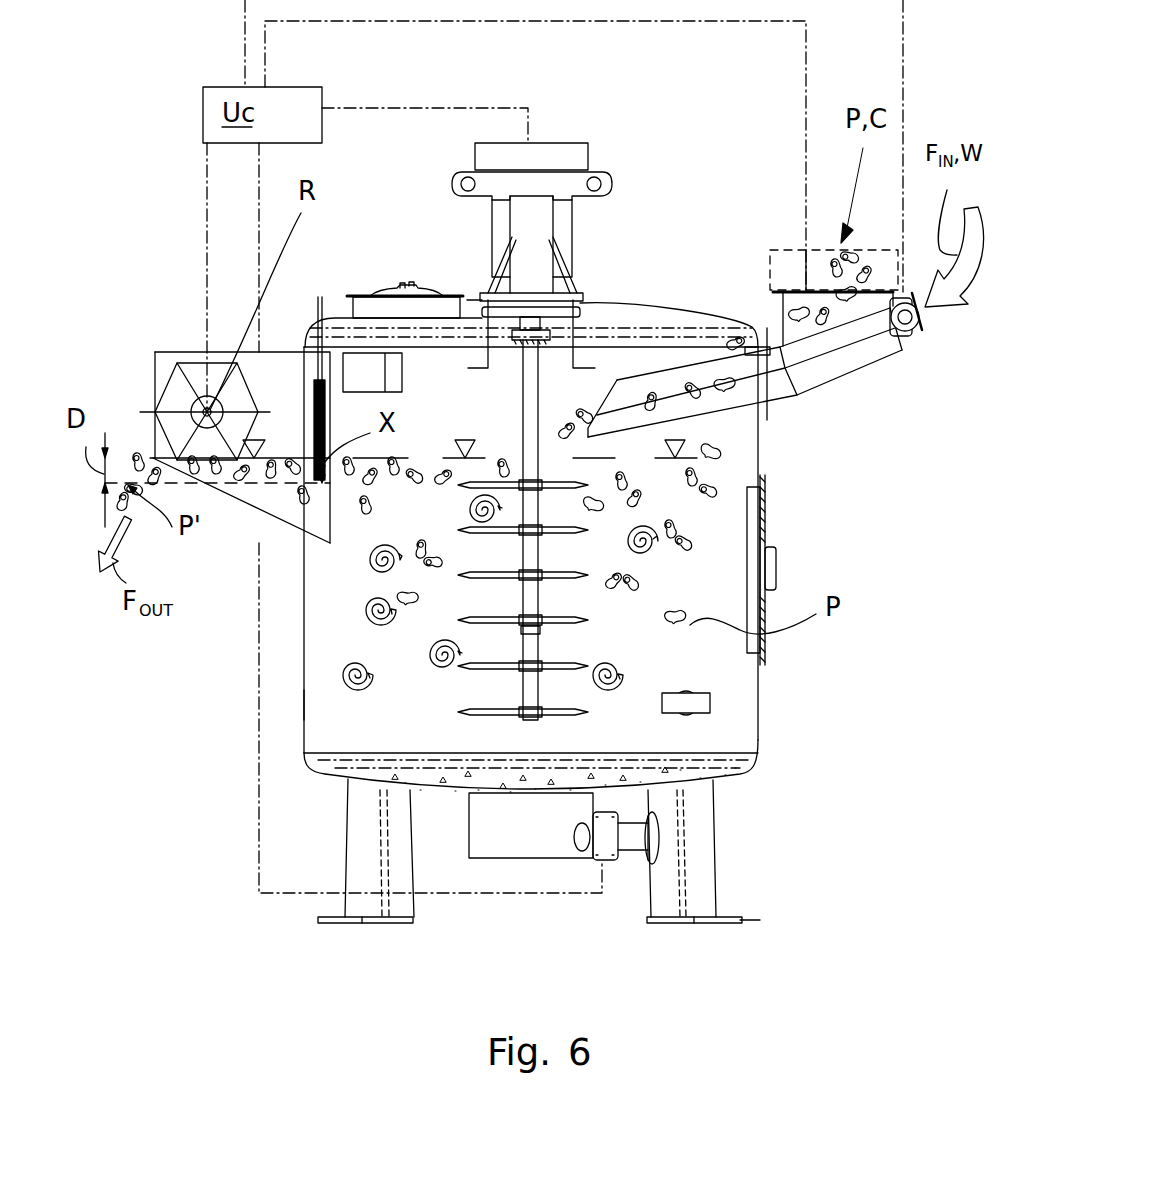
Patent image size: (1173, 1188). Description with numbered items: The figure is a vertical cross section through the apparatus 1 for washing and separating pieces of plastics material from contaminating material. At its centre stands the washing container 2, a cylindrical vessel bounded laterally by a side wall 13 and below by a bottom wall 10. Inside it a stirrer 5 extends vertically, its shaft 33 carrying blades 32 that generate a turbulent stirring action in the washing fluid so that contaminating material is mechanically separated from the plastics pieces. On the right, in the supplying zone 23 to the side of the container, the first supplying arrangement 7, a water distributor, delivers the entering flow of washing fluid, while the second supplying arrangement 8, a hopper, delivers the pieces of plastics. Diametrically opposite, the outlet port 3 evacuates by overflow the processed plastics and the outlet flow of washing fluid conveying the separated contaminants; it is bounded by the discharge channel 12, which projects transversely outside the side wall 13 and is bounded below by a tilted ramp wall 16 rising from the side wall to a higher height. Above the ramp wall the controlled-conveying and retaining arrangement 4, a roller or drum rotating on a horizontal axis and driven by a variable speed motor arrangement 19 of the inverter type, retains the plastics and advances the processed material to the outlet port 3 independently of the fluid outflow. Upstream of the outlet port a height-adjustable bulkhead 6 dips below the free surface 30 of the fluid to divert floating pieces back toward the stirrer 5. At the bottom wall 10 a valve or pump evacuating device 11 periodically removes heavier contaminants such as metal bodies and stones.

The apparatus 1 is at (776, 908).
The washing container 2 is at (760, 737).
The outlet port 3 is at (137, 420).
The controlled-conveying and retaining arrangement 4 is at (187, 333).
The stirrer 5 is at (527, 677).
The bulkhead 6 is at (318, 410).
The first supplying arrangement 7 is at (917, 337).
The second supplying arrangement 8 is at (788, 248).
The bottom wall 10 is at (340, 778).
The valve or pump evacuating device 11 is at (622, 863).
The discharge channel 12 is at (302, 520).
The side wall 13 is at (303, 700).
The ramp wall 16 is at (285, 525).
The variable speed motor arrangement 19 is at (152, 325).
The supplying zone 23 is at (785, 188).
The free surface 30 is at (462, 440).
The blades 32 is at (588, 712).
The shaft 33 is at (533, 404).